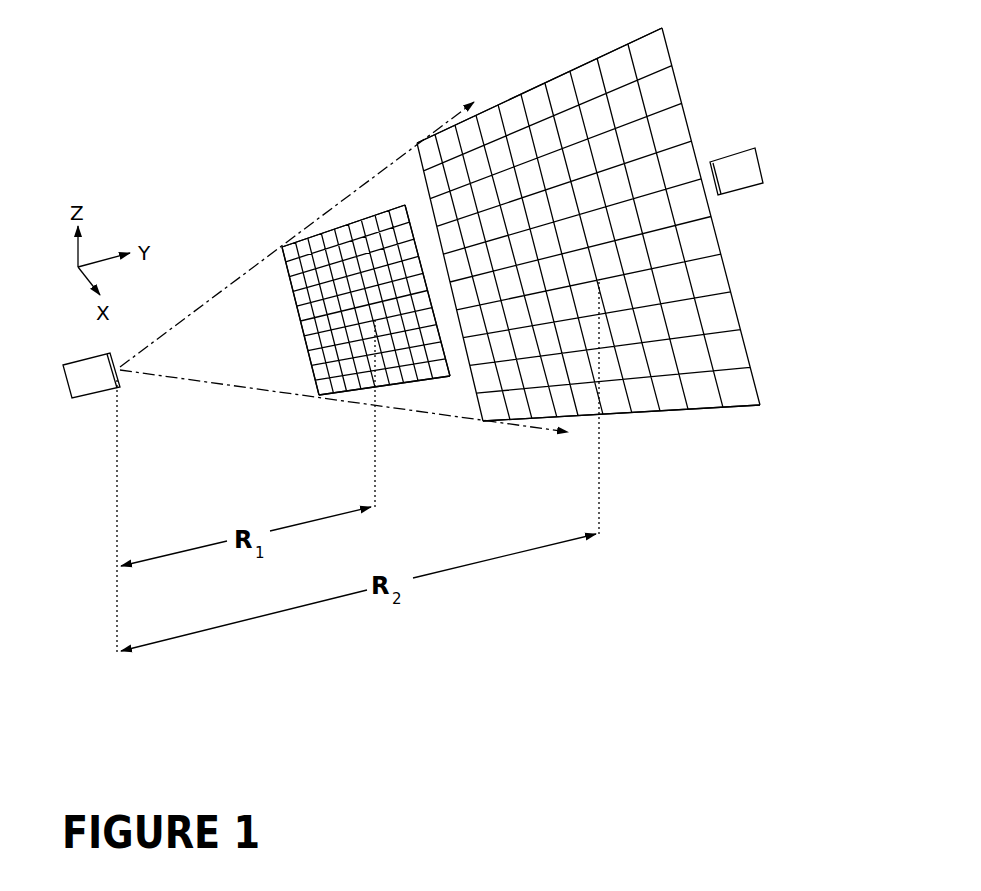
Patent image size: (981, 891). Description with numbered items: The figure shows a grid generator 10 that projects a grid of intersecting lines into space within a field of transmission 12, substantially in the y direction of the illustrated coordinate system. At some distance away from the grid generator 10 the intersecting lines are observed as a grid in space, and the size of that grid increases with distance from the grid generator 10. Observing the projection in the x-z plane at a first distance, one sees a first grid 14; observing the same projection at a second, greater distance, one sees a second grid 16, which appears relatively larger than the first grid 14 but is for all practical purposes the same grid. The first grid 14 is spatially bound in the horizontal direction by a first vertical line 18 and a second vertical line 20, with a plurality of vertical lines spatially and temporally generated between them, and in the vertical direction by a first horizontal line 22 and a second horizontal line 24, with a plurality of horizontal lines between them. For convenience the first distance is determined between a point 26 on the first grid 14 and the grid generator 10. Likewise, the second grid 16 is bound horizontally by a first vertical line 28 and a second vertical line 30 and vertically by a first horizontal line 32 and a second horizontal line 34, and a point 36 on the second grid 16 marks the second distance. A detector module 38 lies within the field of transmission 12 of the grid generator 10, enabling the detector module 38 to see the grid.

The grid generator 10 is at (99, 398).
The field of transmission 12 is at (246, 361).
The first grid 14 is at (364, 211).
The second grid 16 is at (698, 146).
The first vertical line 18 is at (287, 271).
The second vertical line 20 is at (413, 227).
The first horizontal line 22 is at (328, 226).
The second horizontal line 24 is at (413, 385).
The point 26 is at (373, 317).
The first vertical line of the second grid 28 is at (480, 380).
The second vertical line of the second grid 30 is at (681, 82).
The first horizontal line of the second grid 32 is at (505, 98).
The second horizontal line of the second grid 34 is at (680, 410).
The point on the second grid 36 is at (601, 279).
The detector module 38 is at (768, 164).